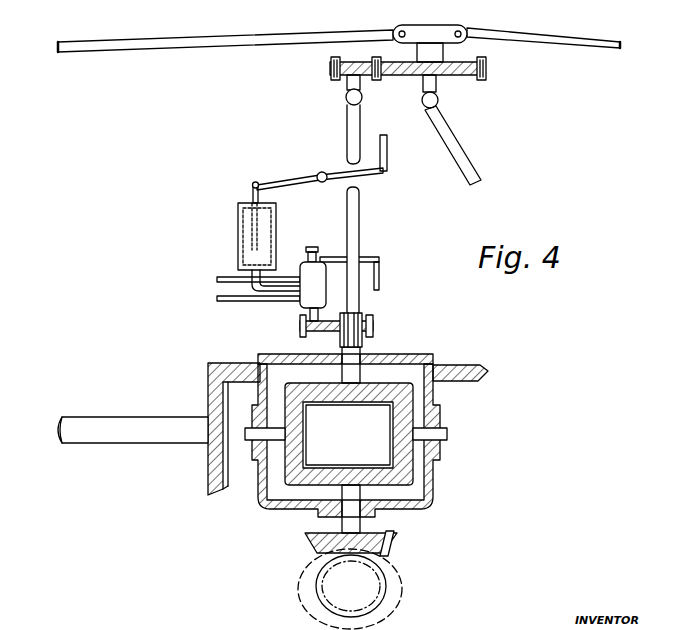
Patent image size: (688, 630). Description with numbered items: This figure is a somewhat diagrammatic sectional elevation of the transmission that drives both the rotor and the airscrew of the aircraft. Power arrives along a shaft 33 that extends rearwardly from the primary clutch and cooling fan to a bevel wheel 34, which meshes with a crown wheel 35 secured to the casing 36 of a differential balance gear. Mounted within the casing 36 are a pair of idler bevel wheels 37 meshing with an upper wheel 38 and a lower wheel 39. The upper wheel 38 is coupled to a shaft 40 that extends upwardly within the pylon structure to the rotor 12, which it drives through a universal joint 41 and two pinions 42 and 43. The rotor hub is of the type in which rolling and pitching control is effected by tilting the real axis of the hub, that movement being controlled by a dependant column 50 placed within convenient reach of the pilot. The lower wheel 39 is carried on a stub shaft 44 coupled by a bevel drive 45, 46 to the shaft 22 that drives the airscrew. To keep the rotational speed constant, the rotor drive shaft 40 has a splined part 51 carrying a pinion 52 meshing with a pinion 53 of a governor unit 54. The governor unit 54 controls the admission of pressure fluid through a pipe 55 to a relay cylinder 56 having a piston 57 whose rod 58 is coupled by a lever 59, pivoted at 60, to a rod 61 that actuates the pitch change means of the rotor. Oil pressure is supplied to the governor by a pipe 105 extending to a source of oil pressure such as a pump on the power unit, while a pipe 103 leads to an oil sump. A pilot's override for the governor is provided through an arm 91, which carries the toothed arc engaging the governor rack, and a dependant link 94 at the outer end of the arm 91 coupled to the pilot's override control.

The rotor 12 is at (432, 28).
The pinion 42 is at (330, 68).
The pinion 43 is at (488, 72).
The universal joint 41 is at (346, 96).
The dependant column 50 is at (455, 136).
The rod 61 is at (388, 148).
The lever 59 is at (292, 178).
The pivot 60 is at (321, 172).
The rod 58 is at (251, 190).
The relay cylinder 56 is at (238, 223).
The piston 57 is at (270, 252).
The pipe 105 is at (238, 278).
The pipe 103 is at (240, 298).
The pipe 55 is at (266, 289).
The arm 91 is at (364, 262).
The dependant link 94 is at (381, 265).
The governor unit 54 is at (318, 280).
The shaft 40 is at (353, 217).
The pinion 53 is at (300, 326).
The pinion 52 is at (375, 330).
The splined part 51 is at (363, 321).
The idler bevel wheels 37 is at (434, 409).
The casing 36 is at (403, 358).
The crown wheel 35 is at (470, 366).
The bevel wheel 34 is at (216, 458).
The shaft 33 is at (178, 425).
The upper wheel 38 is at (332, 392).
The lower wheel 39 is at (401, 488).
The stub shaft 44 is at (340, 520).
The bevel drive 45 is at (395, 545).
The shaft 22 is at (344, 585).
The bevel drive 46 is at (396, 590).